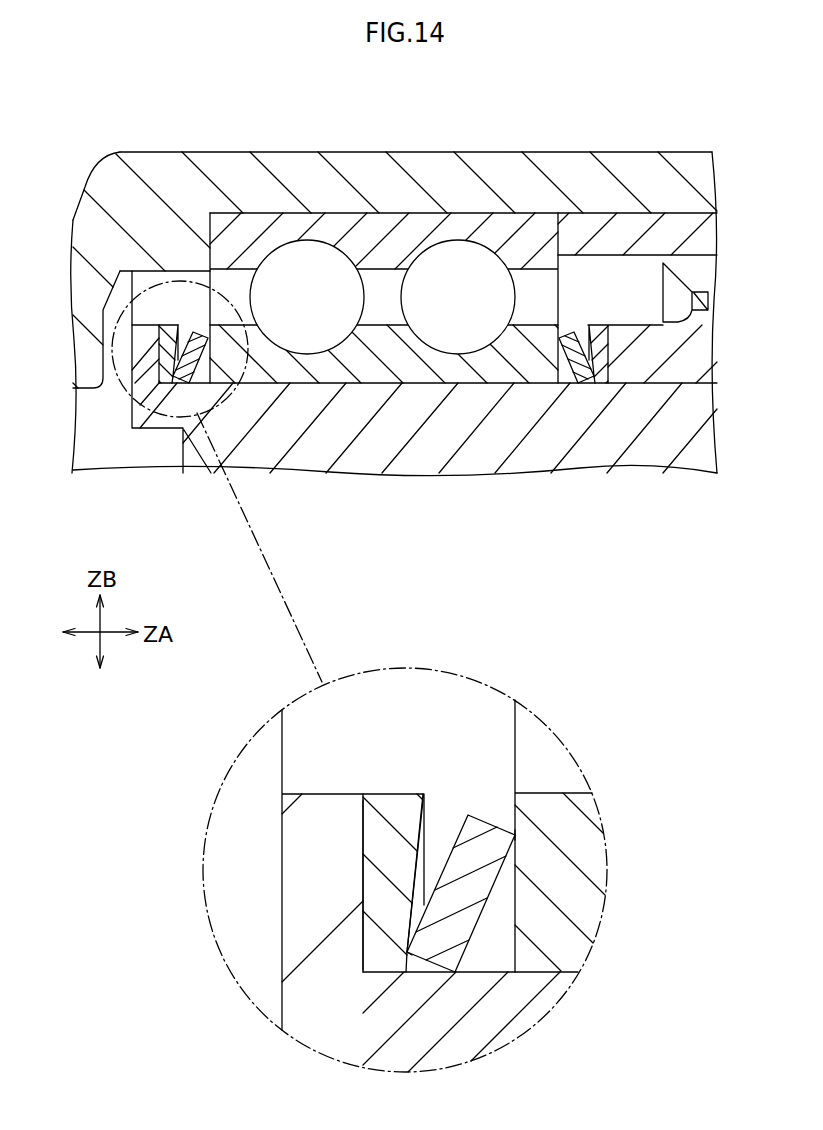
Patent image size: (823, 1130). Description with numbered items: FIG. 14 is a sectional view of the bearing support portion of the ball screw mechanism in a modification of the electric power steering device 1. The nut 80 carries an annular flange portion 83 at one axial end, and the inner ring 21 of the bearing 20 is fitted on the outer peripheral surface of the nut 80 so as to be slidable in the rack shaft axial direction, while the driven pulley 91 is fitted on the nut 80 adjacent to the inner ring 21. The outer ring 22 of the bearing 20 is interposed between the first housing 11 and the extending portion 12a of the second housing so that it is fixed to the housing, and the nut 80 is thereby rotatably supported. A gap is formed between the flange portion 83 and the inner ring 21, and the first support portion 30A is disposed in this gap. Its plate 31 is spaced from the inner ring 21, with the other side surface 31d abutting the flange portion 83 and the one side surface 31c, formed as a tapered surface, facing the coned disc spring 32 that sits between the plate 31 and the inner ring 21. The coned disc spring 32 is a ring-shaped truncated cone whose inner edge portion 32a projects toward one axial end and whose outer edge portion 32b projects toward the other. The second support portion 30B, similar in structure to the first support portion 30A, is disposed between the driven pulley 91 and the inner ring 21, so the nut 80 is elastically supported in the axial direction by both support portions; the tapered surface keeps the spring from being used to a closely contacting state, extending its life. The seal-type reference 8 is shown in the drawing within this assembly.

The electric power steering device 1 is at (65, 167).
The seal device 8 is at (130, 362).
The first housing 11 is at (667, 152).
The extending portion 12a is at (678, 212).
The bearing 20 is at (345, 212).
The inner ring 21 is at (382, 342).
The outer ring 22 is at (413, 223).
The first support portion 30A is at (166, 390).
The second support portion 30B is at (602, 385).
The plate 31 is at (158, 333).
The one side surface 31c is at (423, 827).
The other side surface 31d is at (363, 842).
The coned disc spring 32 is at (190, 334).
The inner edge portion 32a is at (403, 950).
The outer edge portion 32b is at (515, 835).
The nut 80 is at (132, 407).
The flange portion 83 is at (130, 287).
The driven pulley 91 is at (703, 343).